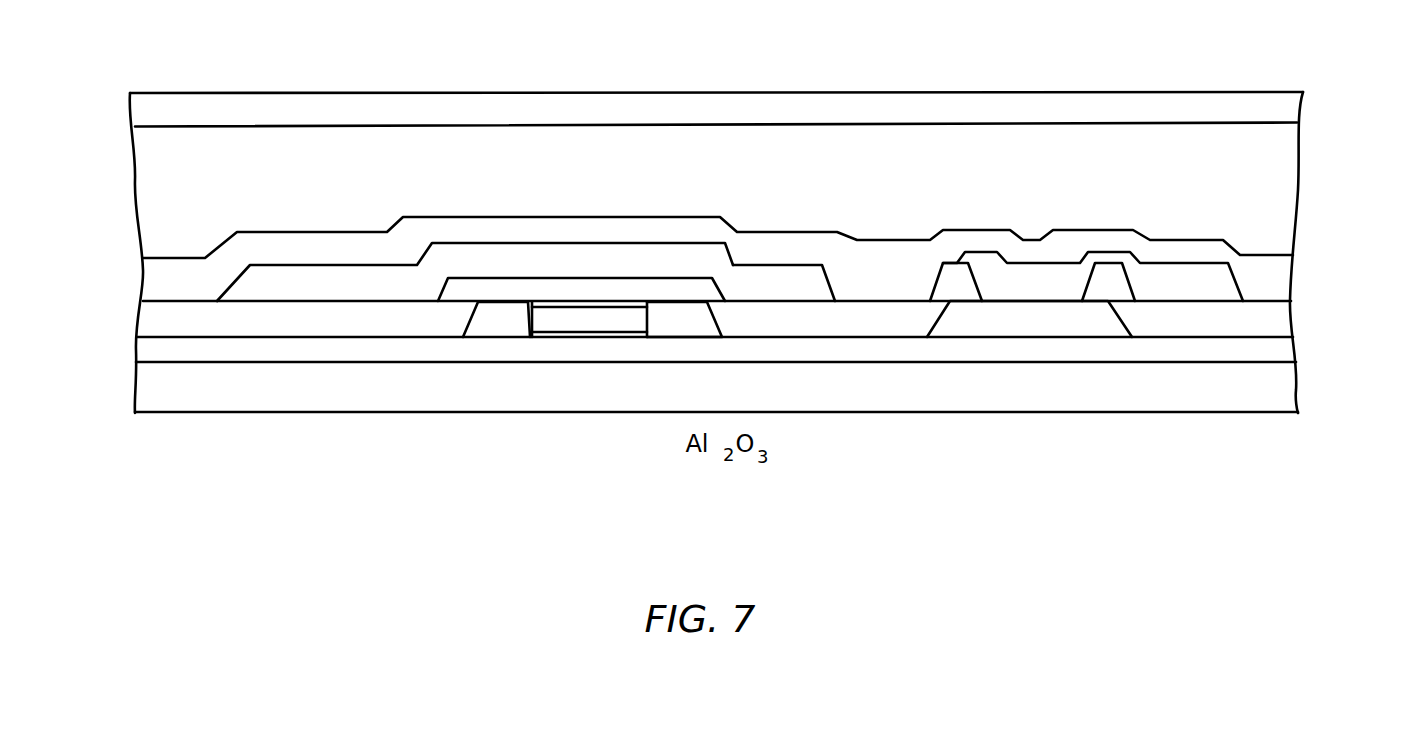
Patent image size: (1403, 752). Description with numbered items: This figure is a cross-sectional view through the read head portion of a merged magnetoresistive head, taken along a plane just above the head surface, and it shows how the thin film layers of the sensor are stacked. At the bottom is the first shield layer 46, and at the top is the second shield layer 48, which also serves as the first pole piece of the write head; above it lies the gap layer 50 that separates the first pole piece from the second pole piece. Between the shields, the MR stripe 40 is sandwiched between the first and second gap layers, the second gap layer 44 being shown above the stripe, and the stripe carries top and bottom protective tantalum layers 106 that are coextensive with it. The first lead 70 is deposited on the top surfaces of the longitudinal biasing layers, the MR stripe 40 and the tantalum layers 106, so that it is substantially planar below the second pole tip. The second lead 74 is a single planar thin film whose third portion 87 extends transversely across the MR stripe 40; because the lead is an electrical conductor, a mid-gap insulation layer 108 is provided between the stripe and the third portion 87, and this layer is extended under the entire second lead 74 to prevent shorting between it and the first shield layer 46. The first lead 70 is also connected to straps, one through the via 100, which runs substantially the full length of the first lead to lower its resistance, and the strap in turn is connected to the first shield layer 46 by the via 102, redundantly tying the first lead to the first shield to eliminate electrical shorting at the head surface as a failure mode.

The gap layer 50 is at (1268, 110).
The second shield layer 48 is at (1243, 188).
The second gap layer 44 is at (1270, 281).
The via 100 is at (1109, 262).
The second lead 74 is at (478, 232).
The third portion 87 is at (682, 265).
The mid-gap insulation layer 108 is at (178, 322).
The MR stripe 40 is at (620, 322).
The protective tantalum layers 106 is at (539, 307).
The first lead 70 is at (1115, 330).
The via 102 is at (1268, 346).
The first shield layer 46 is at (1262, 380).